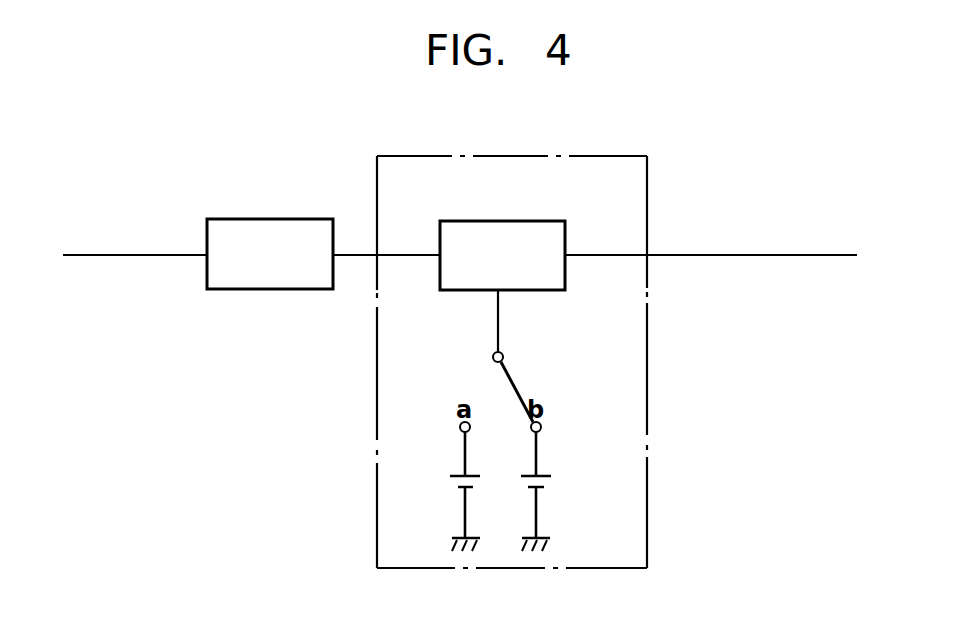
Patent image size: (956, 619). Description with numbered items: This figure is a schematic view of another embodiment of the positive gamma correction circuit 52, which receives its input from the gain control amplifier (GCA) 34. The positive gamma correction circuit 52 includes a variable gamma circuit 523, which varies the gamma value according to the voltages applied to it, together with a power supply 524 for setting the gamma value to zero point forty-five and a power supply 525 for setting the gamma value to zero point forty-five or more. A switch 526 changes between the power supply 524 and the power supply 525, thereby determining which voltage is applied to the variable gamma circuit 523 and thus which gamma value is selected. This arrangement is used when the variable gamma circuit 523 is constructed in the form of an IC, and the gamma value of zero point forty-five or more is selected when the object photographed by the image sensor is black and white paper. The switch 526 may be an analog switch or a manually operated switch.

The gain control amplifier (GCA) 34 is at (272, 219).
The positive gamma correction circuit 52 is at (590, 156).
The variable gamma circuit 523 is at (522, 221).
The power supply 524 is at (448, 480).
The power supply 525 is at (553, 477).
The switch 526 is at (515, 378).